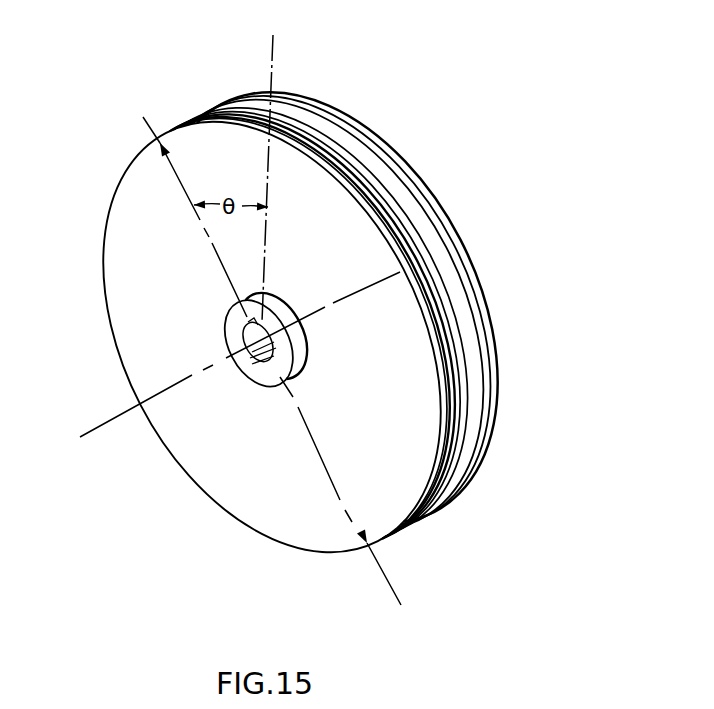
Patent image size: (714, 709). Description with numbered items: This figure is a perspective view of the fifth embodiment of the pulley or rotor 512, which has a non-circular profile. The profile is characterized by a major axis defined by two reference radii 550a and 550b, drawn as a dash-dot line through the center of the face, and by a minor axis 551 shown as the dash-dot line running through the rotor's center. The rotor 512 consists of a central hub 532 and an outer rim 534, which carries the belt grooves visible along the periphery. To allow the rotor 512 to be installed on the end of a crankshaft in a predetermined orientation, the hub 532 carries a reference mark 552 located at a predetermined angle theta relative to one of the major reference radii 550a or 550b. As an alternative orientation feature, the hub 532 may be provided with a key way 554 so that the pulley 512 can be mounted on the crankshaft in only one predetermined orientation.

The rotor 512 is at (418, 168).
The hub 532 is at (135, 319).
The outer rim 534 is at (477, 388).
The reference radius 550a is at (340, 500).
The reference radius 550b is at (175, 172).
The minor axis 551 is at (133, 412).
The reference mark 552 is at (272, 157).
The key way 554 is at (247, 375).